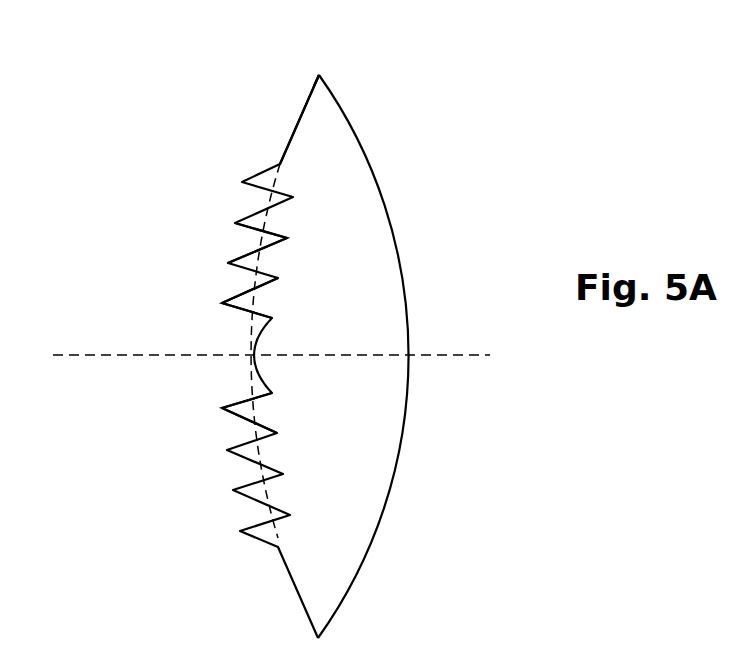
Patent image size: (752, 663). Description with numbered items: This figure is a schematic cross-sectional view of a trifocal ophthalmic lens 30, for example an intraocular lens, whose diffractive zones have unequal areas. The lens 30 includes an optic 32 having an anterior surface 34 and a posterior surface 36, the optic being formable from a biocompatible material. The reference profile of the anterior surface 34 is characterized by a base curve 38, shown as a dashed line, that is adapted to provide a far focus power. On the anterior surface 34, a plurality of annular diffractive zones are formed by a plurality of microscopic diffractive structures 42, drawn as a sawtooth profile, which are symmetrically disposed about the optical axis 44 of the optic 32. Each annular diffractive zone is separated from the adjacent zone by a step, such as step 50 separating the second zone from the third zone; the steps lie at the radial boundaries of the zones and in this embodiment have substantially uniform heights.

The trifocal ophthalmic lens 30 is at (205, 48).
The optic 32 is at (325, 103).
The anterior surface 34 is at (290, 130).
The posterior surface 36 is at (353, 126).
The base curve 38 is at (278, 238).
The microscopic diffractive structures 42 is at (228, 302).
The optical axis 44 is at (102, 354).
The step 50 is at (250, 220).